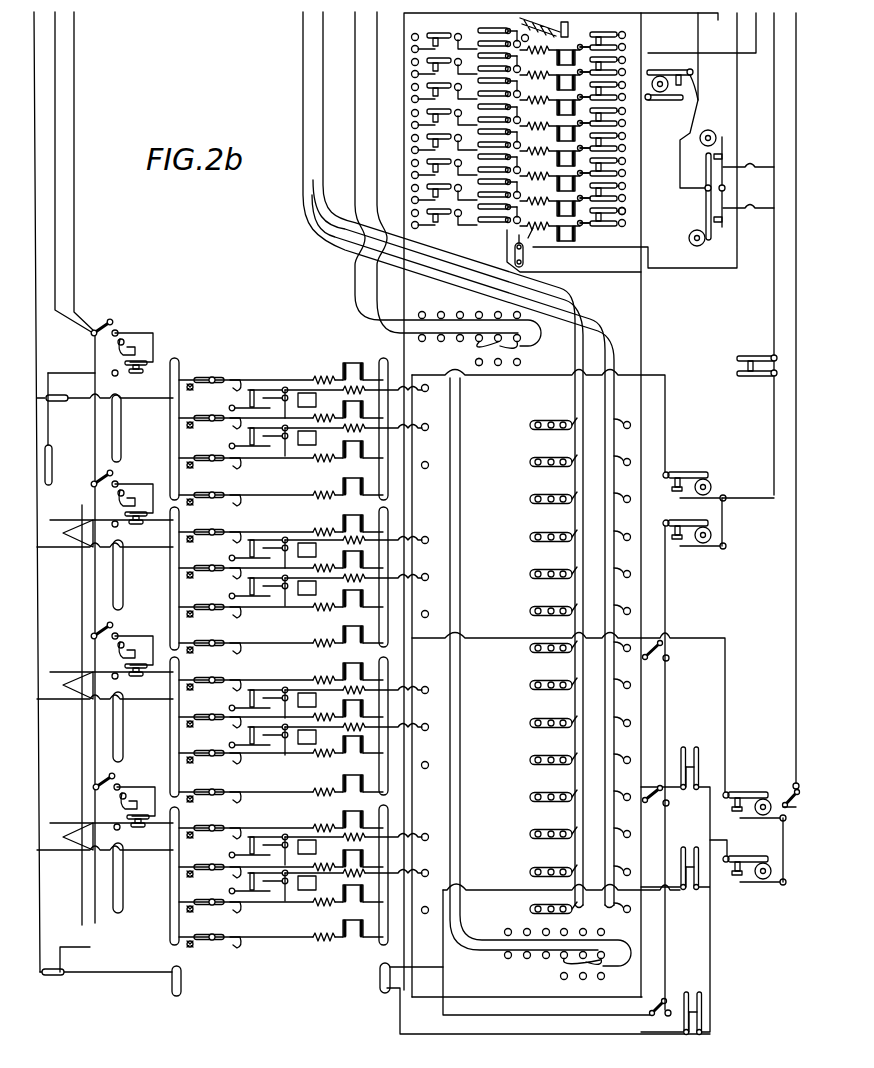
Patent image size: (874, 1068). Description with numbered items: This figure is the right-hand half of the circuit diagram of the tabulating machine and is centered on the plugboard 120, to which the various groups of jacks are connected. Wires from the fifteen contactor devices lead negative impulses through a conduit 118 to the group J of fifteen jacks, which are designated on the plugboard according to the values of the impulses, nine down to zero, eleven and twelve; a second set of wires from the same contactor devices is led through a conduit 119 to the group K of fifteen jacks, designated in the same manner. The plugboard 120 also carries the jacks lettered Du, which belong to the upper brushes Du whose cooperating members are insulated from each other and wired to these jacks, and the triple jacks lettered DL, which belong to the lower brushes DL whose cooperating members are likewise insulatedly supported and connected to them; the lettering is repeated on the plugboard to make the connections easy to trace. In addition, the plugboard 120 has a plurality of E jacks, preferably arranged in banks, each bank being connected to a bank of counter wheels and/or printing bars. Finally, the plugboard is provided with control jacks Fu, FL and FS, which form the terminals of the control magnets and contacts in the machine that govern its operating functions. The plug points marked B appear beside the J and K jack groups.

The conduit 118 is at (353, 100).
The conduit 119 is at (377, 100).
The plugboard 120 is at (636, 346).
The group of jacks K is at (511, 342).
The group of jacks J is at (549, 990).
The E jacks E is at (432, 403).
The DL brushes and triple jacks DL is at (530, 425).
The DU brushes and jacks Du is at (631, 426).
The control jack FL is at (420, 228).
The control jack FS is at (524, 250).
The control jack Fu is at (614, 218).
The terminal B is at (473, 379).